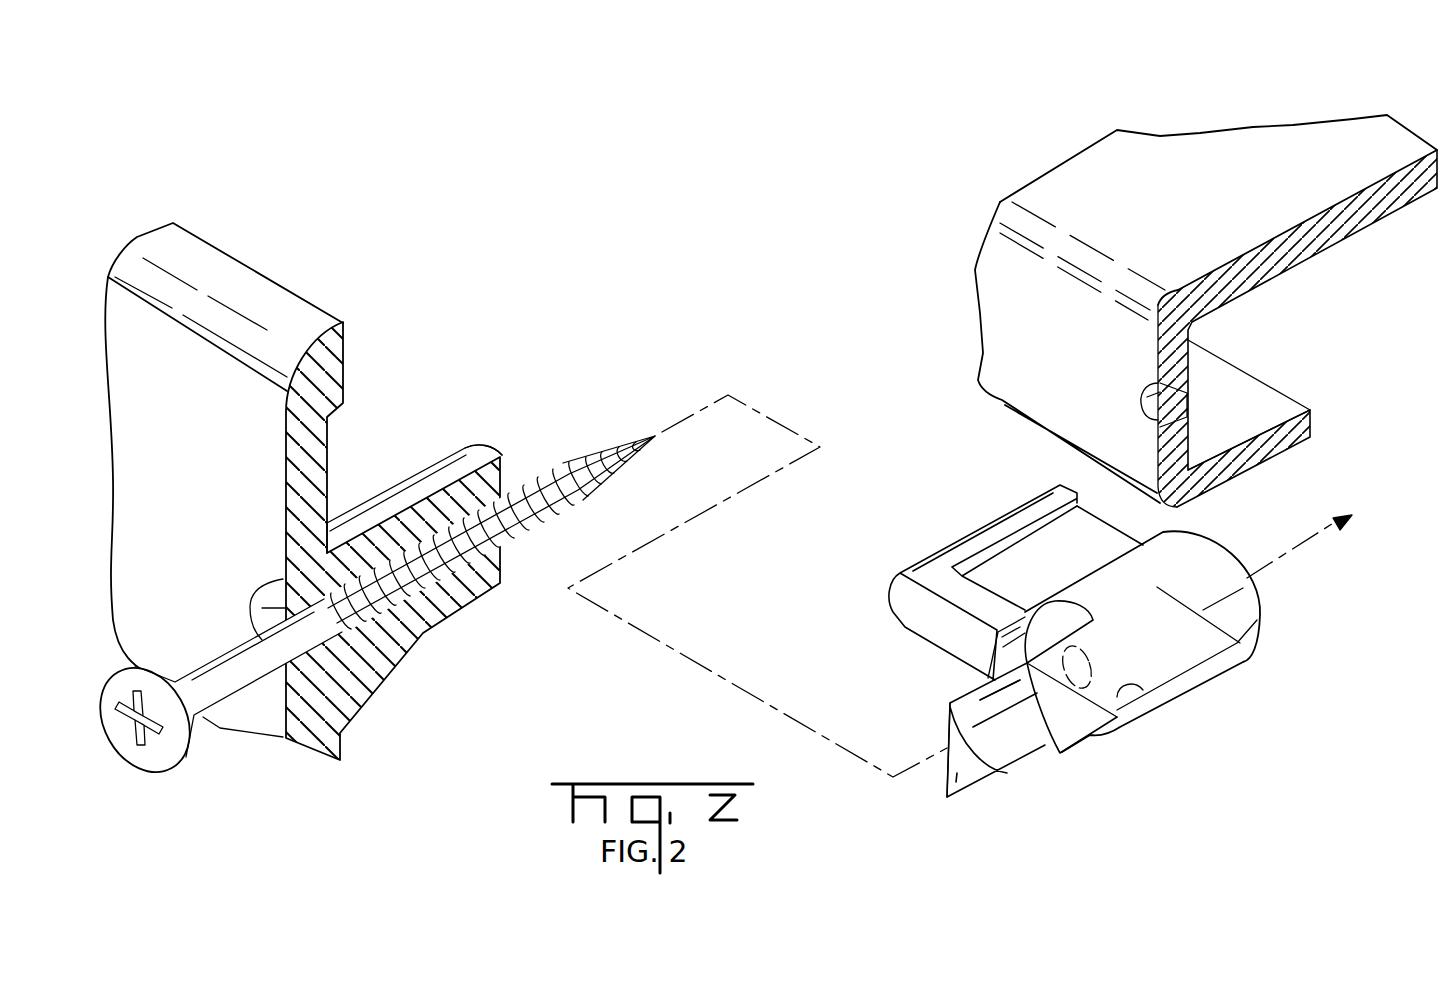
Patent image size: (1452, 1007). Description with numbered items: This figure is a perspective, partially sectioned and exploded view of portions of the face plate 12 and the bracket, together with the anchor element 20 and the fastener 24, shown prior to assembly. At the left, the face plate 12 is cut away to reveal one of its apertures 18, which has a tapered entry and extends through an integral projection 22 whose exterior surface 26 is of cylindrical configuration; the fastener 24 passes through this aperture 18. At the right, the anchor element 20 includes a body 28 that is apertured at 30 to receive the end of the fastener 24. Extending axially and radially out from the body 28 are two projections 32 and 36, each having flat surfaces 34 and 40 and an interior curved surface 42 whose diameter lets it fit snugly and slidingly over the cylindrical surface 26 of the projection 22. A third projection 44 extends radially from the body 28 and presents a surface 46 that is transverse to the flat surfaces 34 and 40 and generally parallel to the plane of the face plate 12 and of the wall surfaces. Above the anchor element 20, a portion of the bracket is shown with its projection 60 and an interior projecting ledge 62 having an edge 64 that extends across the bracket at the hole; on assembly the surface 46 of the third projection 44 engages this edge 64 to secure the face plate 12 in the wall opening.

The face plate 12 is at (233, 292).
The aperture 18 is at (252, 598).
The anchor element 20 is at (1061, 671).
The integral projection 22 is at (413, 490).
The fastener 24 is at (248, 655).
The exterior surface 26 is at (487, 453).
The body 28 is at (1185, 545).
The aperture 30 is at (1090, 663).
The projection 32 is at (1075, 723).
The flat surface 34 is at (1143, 690).
The projection 36 is at (947, 787).
The flat surface 40 is at (940, 733).
The interior curved surface 42 is at (1030, 720).
The third projection 44 is at (1003, 557).
The surface 46 is at (903, 597).
The projection 60 is at (1123, 197).
The ledge 62 is at (1250, 411).
The edge 64 is at (1270, 383).